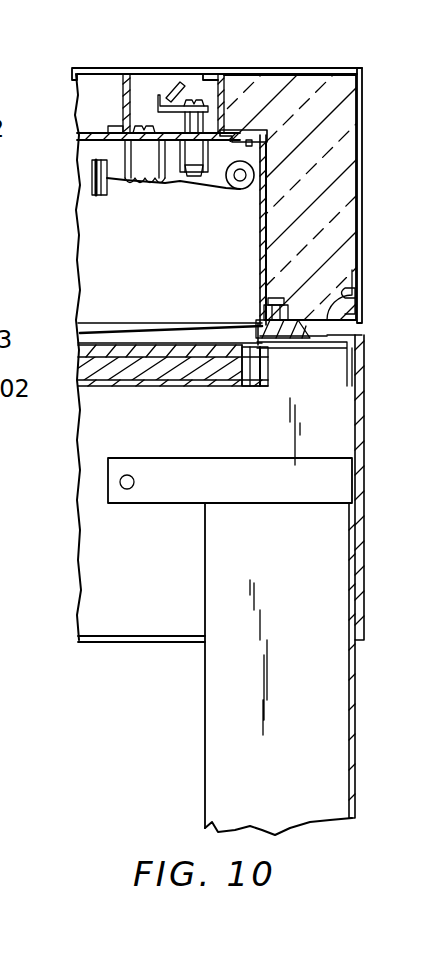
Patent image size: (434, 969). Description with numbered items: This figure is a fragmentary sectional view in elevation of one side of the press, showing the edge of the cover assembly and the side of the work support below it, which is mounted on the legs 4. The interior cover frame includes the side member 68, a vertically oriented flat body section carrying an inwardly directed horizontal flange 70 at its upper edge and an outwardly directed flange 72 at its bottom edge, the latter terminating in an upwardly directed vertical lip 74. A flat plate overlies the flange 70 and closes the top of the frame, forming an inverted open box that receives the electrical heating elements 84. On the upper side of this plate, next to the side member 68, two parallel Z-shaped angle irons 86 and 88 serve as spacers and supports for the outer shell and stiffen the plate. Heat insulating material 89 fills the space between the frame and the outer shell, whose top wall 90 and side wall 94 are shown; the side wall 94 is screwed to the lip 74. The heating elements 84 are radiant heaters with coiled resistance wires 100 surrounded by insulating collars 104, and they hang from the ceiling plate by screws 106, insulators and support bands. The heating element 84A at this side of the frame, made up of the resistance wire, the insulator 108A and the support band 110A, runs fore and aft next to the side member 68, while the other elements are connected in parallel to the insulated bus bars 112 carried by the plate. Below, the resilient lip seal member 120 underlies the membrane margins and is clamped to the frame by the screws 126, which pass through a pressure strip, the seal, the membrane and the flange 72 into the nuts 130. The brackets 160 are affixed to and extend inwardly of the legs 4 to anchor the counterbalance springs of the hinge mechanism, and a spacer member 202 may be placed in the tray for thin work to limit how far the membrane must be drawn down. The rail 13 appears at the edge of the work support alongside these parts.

The legs 4 is at (371, 737).
The rail 13 is at (80, 350).
The side member 68 is at (259, 256).
The horizontal flange 70 is at (248, 163).
The outwardly directed flange 72 is at (358, 270).
The vertical lip 74 is at (352, 284).
The electrical heating elements 84 is at (86, 173).
The heating element 84A is at (272, 172).
The Z-shaped angle iron 86 is at (125, 87).
The Z-shaped angle iron 88 is at (224, 100).
The heat insulating material 89 is at (348, 104).
The top wall 90 is at (96, 68).
The side wall 94 is at (363, 232).
The coiled resistance wires 100 is at (148, 186).
The insulating collars 104 is at (100, 197).
The screws 106 is at (144, 130).
The insulator 108A is at (132, 148).
The support band 110A is at (210, 182).
The insulated bus bars 112 is at (163, 99).
The lip seal member 120 is at (252, 330).
The screws 126 is at (296, 300).
The nuts 130 is at (262, 312).
The brackets 160 is at (155, 492).
The spacer member 202 is at (95, 366).